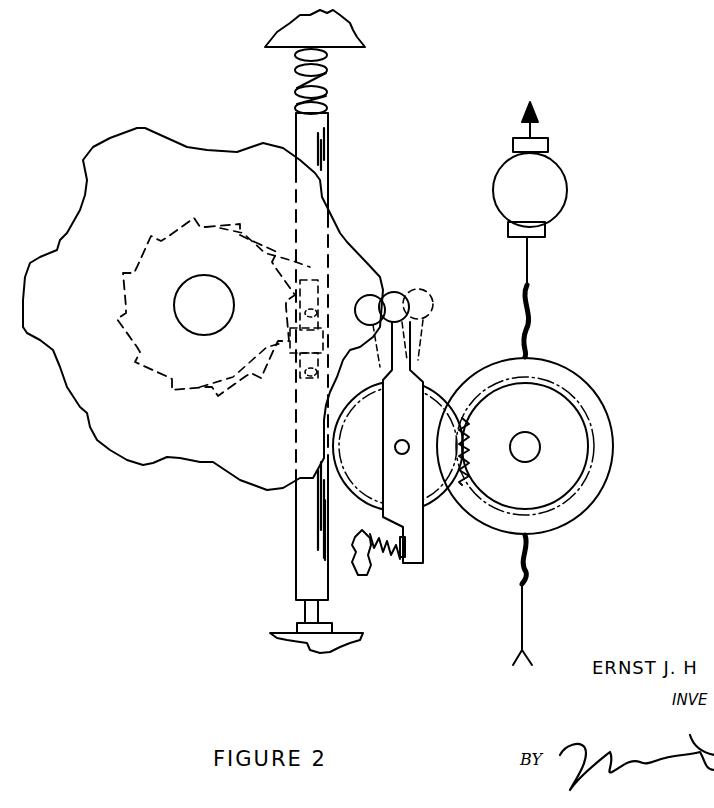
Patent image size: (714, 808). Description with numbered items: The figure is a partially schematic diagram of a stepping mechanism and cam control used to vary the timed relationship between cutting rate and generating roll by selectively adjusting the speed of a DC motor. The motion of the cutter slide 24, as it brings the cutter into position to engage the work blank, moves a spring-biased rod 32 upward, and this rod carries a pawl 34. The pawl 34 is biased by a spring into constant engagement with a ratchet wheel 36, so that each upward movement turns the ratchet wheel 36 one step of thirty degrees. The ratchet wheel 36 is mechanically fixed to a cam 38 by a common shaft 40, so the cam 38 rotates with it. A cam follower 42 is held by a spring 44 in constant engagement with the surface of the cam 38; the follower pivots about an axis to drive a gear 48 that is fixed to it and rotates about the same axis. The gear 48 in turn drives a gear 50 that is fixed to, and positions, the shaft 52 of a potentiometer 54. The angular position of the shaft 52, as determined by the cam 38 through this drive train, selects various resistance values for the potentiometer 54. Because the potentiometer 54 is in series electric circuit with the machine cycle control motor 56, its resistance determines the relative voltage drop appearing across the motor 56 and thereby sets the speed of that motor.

The cutter slide 24 is at (307, 642).
The spring-biased rod 32 is at (310, 133).
The pawl 34 is at (313, 273).
The ratchet wheel 36 is at (208, 240).
The cam 38 is at (113, 157).
The common shaft 40 is at (202, 307).
The cam follower 42 is at (397, 290).
The spring 44 is at (390, 555).
The gear 48 is at (429, 413).
The gear 50 is at (567, 428).
The shaft 52 is at (537, 452).
The potentiometer 54 is at (575, 385).
The machine cycle control motor 56 is at (560, 197).